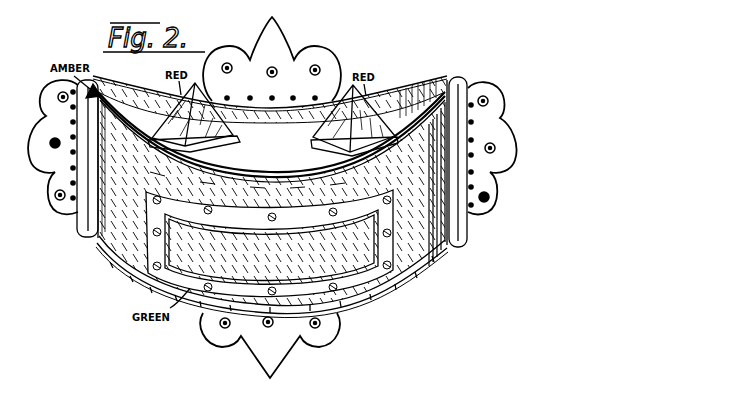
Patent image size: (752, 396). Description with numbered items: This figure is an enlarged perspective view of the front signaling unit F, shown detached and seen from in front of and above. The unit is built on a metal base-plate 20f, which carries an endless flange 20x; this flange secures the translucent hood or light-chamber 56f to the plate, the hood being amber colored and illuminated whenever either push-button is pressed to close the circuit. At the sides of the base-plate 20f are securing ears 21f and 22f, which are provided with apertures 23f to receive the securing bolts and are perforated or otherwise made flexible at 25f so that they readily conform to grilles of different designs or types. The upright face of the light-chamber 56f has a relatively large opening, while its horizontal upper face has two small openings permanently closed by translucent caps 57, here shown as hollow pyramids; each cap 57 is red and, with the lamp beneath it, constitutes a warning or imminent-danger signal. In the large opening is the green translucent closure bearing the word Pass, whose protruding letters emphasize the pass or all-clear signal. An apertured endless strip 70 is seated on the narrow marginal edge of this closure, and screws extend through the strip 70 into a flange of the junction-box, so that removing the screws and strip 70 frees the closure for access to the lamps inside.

The endless flange 20x is at (142, 74).
The base-plate 20f is at (450, 86).
The securing ear 21f is at (46, 115).
The securing ear 22f is at (300, 50).
The apertures 23f is at (273, 76).
The perforations 25f is at (270, 96).
The light-chamber 56f is at (452, 92).
The translucent cap 57 is at (300, 124).
The apertured endless strip 70 is at (153, 197).
The front signaling unit F is at (74, 221).